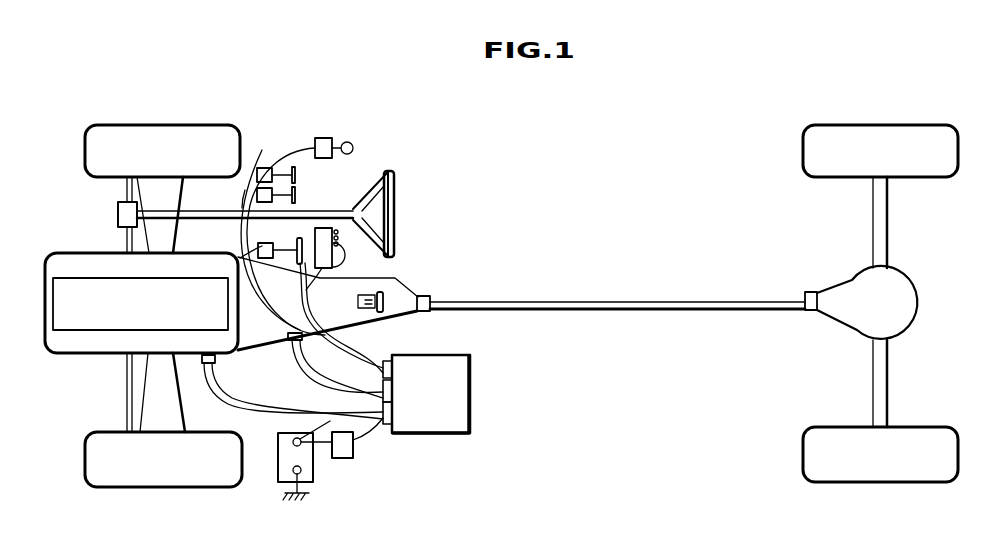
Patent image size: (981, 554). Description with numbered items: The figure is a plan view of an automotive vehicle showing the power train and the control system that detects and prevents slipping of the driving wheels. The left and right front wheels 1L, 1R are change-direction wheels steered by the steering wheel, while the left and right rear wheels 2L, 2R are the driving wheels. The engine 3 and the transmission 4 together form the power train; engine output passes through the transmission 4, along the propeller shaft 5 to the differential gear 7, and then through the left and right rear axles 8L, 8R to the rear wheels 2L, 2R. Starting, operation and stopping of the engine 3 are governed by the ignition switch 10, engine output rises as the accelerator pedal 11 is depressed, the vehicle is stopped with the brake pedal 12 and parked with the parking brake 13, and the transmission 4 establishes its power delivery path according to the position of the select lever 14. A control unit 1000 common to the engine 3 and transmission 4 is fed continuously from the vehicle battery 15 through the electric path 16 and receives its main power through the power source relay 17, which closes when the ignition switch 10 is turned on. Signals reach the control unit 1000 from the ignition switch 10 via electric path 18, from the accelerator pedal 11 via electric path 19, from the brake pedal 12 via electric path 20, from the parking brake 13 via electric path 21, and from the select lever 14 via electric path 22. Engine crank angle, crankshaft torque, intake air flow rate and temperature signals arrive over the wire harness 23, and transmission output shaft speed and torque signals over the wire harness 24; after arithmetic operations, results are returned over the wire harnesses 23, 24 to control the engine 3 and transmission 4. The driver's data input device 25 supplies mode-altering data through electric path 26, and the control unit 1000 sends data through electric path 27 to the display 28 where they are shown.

The right front wheel 1R is at (119, 125).
The left front wheel 1L is at (106, 488).
The right rear wheel 2R is at (941, 125).
The left rear wheel 2L is at (929, 483).
The engine 3 is at (76, 356).
The transmission 4 is at (253, 347).
The propeller shaft 5 is at (680, 299).
The differential gear 7 is at (918, 312).
The right rear axle 8R is at (889, 240).
The left rear axle 8L is at (889, 379).
The ignition switch 10 is at (328, 138).
The accelerator pedal 11 is at (297, 175).
The brake pedal 12 is at (297, 195).
The parking brake 13 is at (258, 250).
The select lever 14 is at (386, 298).
The vehicle battery 15 is at (279, 458).
The electric path 16 is at (293, 437).
The power source relay 17 is at (346, 459).
The electric path 18 is at (295, 143).
The electric path 19 is at (247, 167).
The electric path 20 is at (242, 198).
The electric path 21 is at (240, 258).
The electric path 22 is at (398, 315).
The wire harness 23 is at (225, 394).
The wire harness 24 is at (317, 384).
The data input device 25 is at (340, 236).
The electric path 26 is at (297, 287).
The electric path 27 is at (340, 331).
The display 28 is at (346, 257).
The control unit 1000 is at (480, 396).